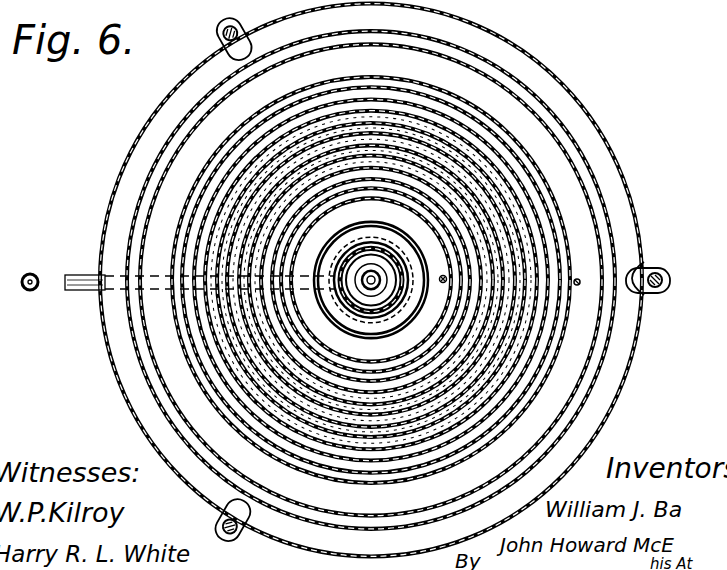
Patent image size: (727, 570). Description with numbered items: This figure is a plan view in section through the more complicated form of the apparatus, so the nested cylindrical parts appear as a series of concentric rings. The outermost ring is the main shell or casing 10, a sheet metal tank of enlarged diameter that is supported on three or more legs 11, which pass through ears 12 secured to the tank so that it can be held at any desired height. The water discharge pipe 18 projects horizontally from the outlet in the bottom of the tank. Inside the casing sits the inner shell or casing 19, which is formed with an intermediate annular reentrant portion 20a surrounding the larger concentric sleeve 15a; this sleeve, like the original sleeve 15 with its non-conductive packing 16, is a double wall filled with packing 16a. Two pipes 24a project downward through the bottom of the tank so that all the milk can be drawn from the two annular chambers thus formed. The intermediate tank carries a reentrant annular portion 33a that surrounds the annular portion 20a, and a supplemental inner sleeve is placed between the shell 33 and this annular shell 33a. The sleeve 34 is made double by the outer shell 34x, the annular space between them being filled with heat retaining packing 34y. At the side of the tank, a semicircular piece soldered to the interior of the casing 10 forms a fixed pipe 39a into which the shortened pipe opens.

The main shell or casing 10 is at (141, 134).
The legs 11 is at (664, 276).
The ears 12 is at (222, 27).
The sleeve 15 is at (358, 262).
The concentric sleeve 15a is at (440, 147).
The non-conductive packing 16 is at (380, 253).
The packing 16a is at (452, 162).
The water discharge pipe 18 is at (66, 275).
The inner shell or casing 19 is at (130, 232).
The intermediate annular reentrant portion 20a is at (327, 200).
The pipes 24a is at (648, 246).
The shell 33 is at (395, 330).
The reentrant annular portion 33a is at (328, 372).
The sleeve 34 is at (437, 86).
The outer shell 34x is at (392, 92).
The heat retaining packing 34y is at (325, 97).
The fixed pipe 39a is at (645, 292).